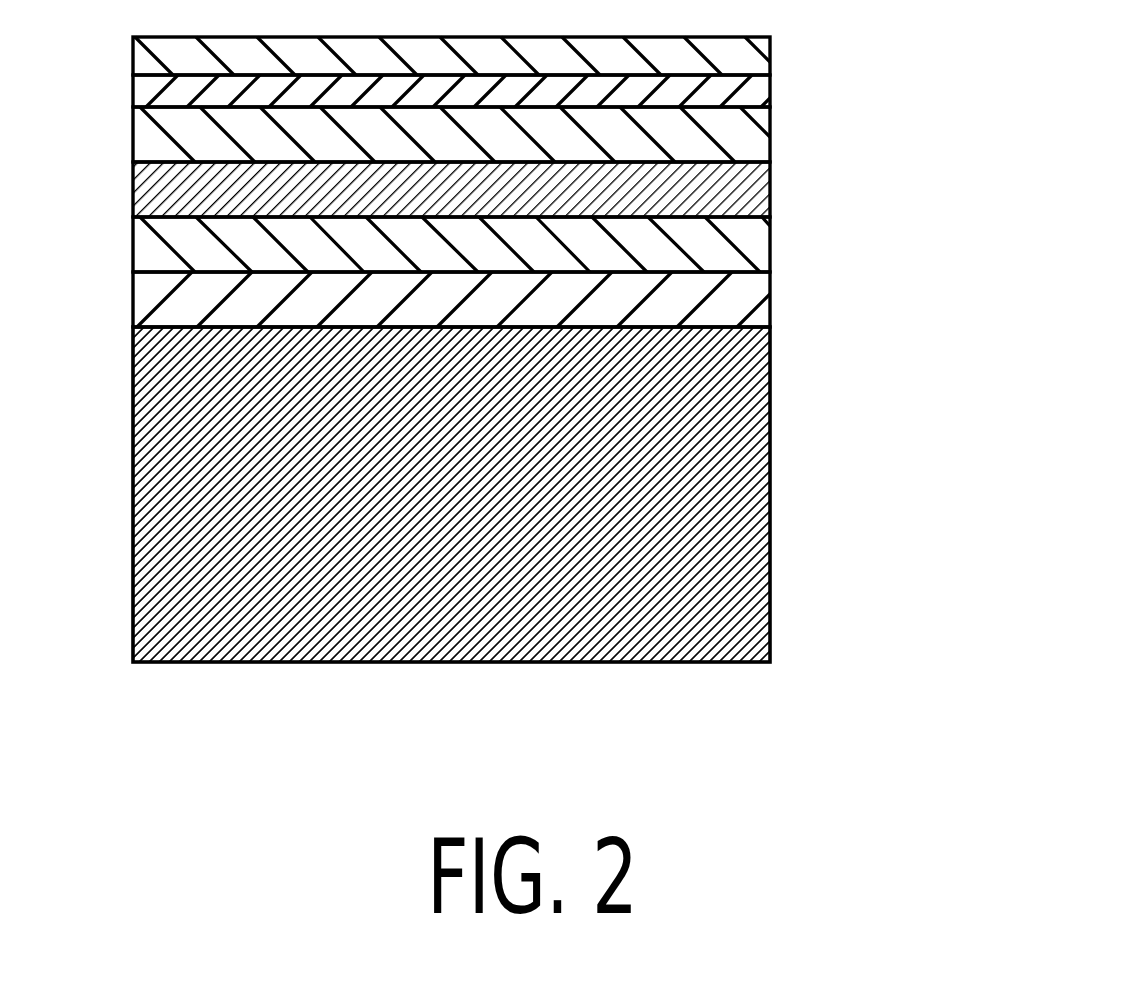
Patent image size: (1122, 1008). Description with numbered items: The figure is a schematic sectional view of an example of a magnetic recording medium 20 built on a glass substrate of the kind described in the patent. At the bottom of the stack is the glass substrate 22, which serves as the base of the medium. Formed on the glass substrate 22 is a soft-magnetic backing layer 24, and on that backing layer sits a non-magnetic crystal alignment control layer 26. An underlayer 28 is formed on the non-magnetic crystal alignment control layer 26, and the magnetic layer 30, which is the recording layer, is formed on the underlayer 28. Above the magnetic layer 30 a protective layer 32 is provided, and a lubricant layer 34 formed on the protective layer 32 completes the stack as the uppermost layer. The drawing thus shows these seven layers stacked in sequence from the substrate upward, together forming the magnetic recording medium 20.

The magnetic recording medium 20 is at (602, 341).
The glass substrate 22 is at (536, 494).
The soft-magnetic backing layer 24 is at (770, 308).
The non-magnetic crystal alignment control layer 26 is at (770, 257).
The underlayer 28 is at (770, 202).
The magnetic layer 30 is at (770, 148).
The protective layer 32 is at (770, 95).
The lubricant layer 34 is at (770, 52).